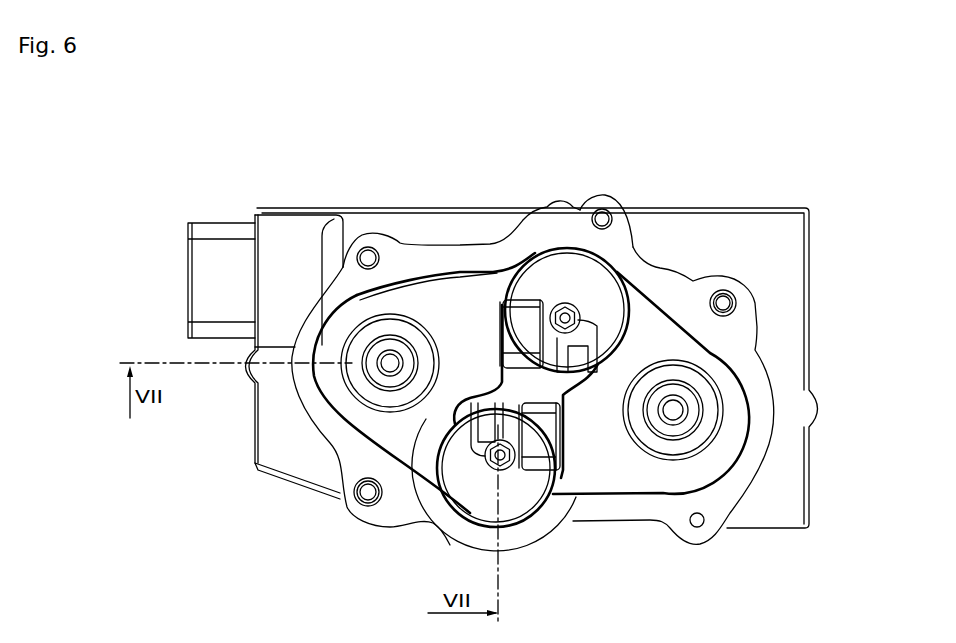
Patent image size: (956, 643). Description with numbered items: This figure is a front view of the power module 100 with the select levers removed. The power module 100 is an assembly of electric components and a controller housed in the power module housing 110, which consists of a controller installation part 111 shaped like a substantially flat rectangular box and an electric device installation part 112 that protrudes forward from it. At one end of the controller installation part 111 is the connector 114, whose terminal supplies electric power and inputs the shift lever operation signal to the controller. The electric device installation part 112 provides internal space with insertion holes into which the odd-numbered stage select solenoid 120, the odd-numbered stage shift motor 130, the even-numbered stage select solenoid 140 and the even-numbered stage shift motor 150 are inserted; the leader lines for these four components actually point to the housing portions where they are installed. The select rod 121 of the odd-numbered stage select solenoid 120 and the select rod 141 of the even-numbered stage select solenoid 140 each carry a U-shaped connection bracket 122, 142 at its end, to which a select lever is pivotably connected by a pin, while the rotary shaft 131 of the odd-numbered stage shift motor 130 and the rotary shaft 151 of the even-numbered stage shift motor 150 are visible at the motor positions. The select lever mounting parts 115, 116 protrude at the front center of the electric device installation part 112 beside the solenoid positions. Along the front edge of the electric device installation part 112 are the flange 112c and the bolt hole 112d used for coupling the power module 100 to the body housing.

The power module 100 is at (318, 145).
The power module housing 110 is at (773, 147).
The controller installation part 111 is at (770, 241).
The electric device installation part 112 is at (675, 285).
The flange 112c is at (602, 200).
The bolt hole 112d is at (601, 213).
The connector 114 is at (223, 227).
The select lever mounting part 115 is at (505, 333).
The select lever mounting part 116 is at (550, 437).
The odd-numbered stage select solenoid 120 is at (558, 277).
The select rod 121 is at (580, 316).
The connection bracket 122 is at (622, 337).
The odd-numbered stage shift motor 130 is at (722, 455).
The rotary shaft 131 is at (700, 418).
The even-numbered stage select solenoid 140 is at (515, 498).
The select rod 141 is at (482, 468).
The connection bracket 142 is at (357, 507).
The even-numbered stage shift motor 150 is at (353, 378).
The rotary shaft 151 is at (385, 385).